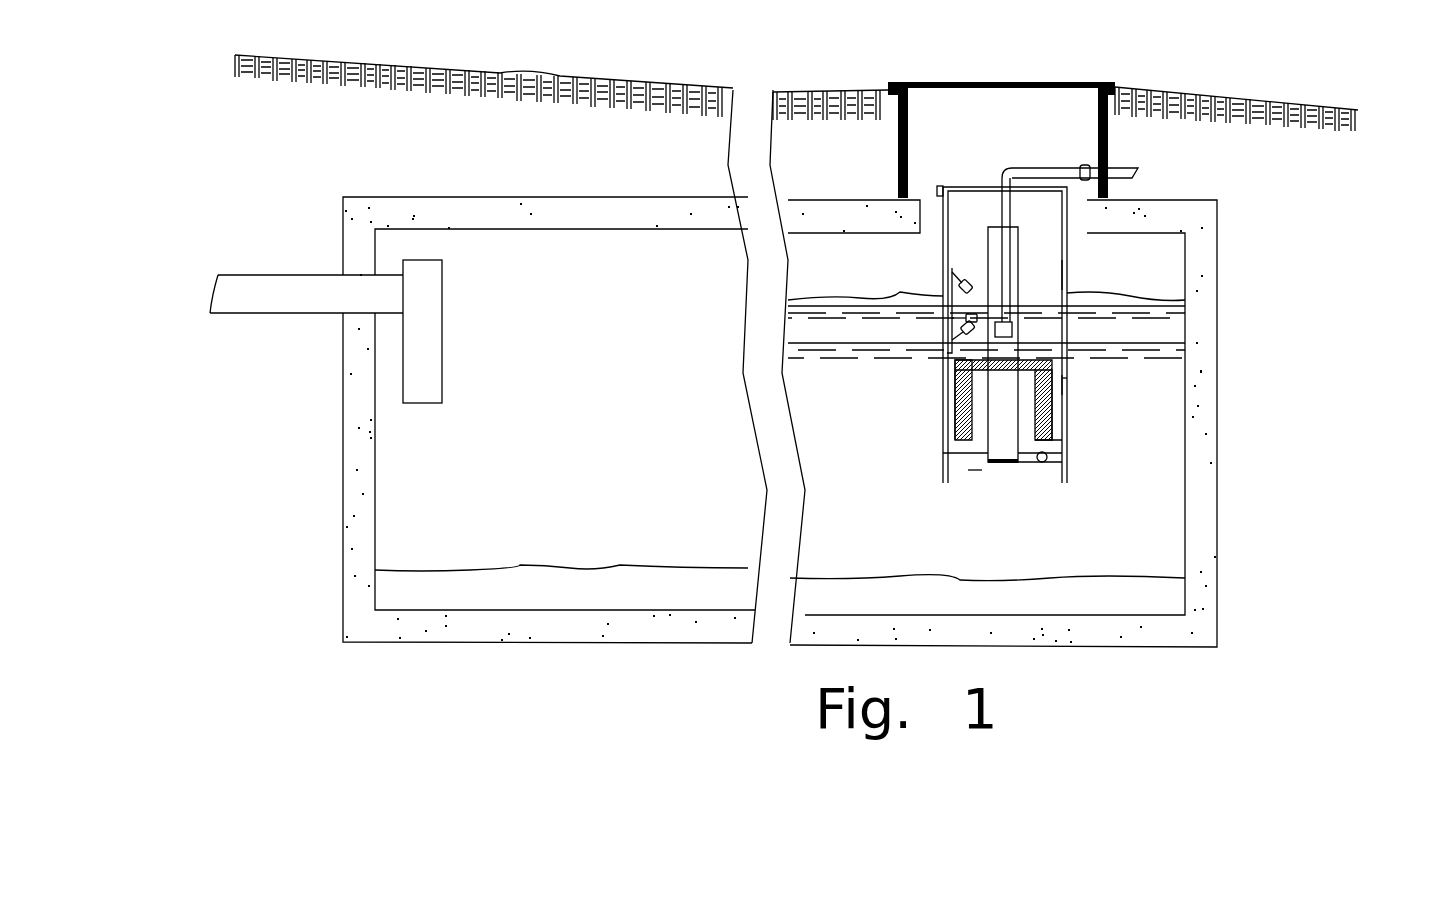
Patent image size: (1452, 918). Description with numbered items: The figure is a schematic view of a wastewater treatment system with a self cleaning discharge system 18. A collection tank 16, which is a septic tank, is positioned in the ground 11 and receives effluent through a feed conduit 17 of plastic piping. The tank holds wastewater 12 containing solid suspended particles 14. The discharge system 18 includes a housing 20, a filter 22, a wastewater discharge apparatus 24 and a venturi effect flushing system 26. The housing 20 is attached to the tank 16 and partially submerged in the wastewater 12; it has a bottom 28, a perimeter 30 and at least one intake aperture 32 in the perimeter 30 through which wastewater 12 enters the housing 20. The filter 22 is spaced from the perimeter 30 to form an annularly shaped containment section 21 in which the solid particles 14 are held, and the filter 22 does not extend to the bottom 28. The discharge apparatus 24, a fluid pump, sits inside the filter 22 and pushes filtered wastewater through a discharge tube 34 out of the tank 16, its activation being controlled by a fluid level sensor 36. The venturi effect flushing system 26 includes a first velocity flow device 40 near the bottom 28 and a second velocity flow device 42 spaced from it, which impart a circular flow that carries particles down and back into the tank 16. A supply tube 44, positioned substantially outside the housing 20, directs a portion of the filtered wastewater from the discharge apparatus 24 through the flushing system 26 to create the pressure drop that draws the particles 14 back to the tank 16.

The ground 11 is at (1337, 107).
The wastewater 12 is at (1140, 553).
The solid suspended particles 14 is at (1167, 600).
The collection tank 16 is at (1203, 360).
The feed conduit 17 is at (312, 275).
The self cleaning discharge system 18 is at (1020, 213).
The housing 20 is at (978, 205).
The annularly shaped containment section 21 is at (1043, 400).
The filter 22 is at (985, 447).
The wastewater discharge apparatus 24 is at (1000, 395).
The venturi effect flushing system 26 is at (1068, 380).
The bottom 28 is at (975, 470).
The perimeter 30 is at (955, 440).
The intake aperture 32 is at (948, 390).
The discharge tube 34 is at (1003, 170).
The fluid level sensor 36 is at (955, 335).
The first velocity flow device 40 is at (1046, 458).
The second velocity flow device 42 is at (1067, 385).
The supply tube 44 is at (1067, 272).